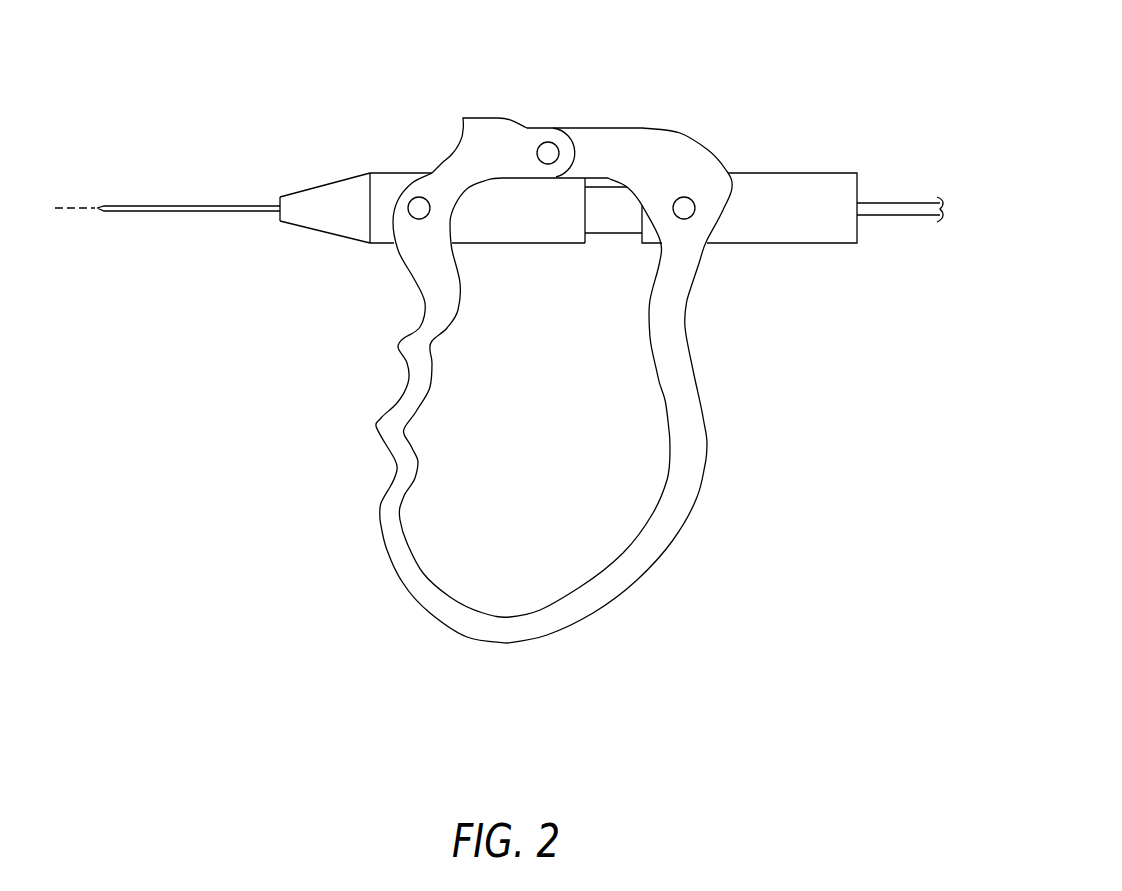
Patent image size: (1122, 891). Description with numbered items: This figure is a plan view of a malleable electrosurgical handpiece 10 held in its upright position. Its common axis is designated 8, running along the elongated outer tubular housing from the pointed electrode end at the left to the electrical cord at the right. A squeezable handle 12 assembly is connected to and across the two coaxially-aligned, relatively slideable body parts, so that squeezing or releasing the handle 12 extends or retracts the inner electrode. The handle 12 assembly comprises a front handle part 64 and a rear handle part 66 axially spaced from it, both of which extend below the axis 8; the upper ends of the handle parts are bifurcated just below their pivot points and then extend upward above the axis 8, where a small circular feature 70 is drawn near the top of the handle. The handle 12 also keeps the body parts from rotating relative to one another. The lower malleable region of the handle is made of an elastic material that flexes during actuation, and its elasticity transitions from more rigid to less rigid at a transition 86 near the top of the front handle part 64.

The handpiece common axis 8 is at (73, 208).
The electrosurgical handpiece 10 is at (762, 68).
The squeezable handle 12 is at (349, 517).
The front handle part 64 is at (377, 425).
The rear handle part 66 is at (707, 445).
The pivot 70 is at (548, 152).
The transition 86 is at (460, 142).